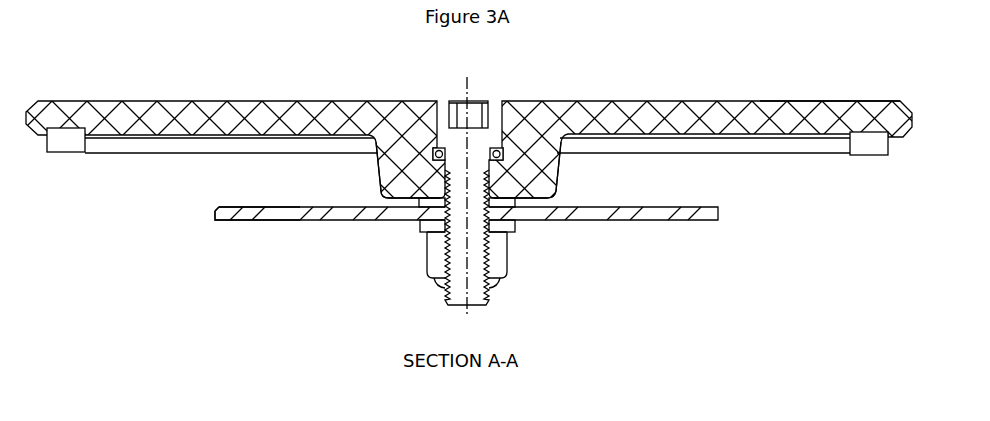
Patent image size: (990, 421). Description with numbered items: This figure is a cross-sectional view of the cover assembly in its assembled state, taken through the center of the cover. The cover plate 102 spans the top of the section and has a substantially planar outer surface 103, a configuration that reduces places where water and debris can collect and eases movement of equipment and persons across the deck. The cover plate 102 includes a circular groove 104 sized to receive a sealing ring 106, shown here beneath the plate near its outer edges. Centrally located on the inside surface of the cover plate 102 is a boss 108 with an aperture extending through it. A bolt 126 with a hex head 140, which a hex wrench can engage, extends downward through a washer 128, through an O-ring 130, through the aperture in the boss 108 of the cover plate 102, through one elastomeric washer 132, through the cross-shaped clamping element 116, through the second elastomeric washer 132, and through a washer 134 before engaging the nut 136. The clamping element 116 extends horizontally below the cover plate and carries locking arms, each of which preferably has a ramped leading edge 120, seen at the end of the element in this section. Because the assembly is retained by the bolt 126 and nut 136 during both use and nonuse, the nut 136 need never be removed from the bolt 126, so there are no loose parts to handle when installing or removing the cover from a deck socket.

The cover plate 102 is at (760, 100).
The outer surface 103 is at (793, 101).
The circular groove 104 is at (863, 135).
The sealing ring 106 is at (812, 156).
The boss 108 is at (563, 180).
The clamping element 116 is at (677, 222).
The ramped leading edge 120 is at (220, 222).
The bolt 126 is at (472, 306).
The washer 128 is at (503, 140).
The O-ring 130 is at (432, 145).
The elastomeric washers 132 is at (522, 229).
The washer 134 is at (520, 239).
The nut 136 is at (512, 268).
The hex head 140 is at (462, 108).